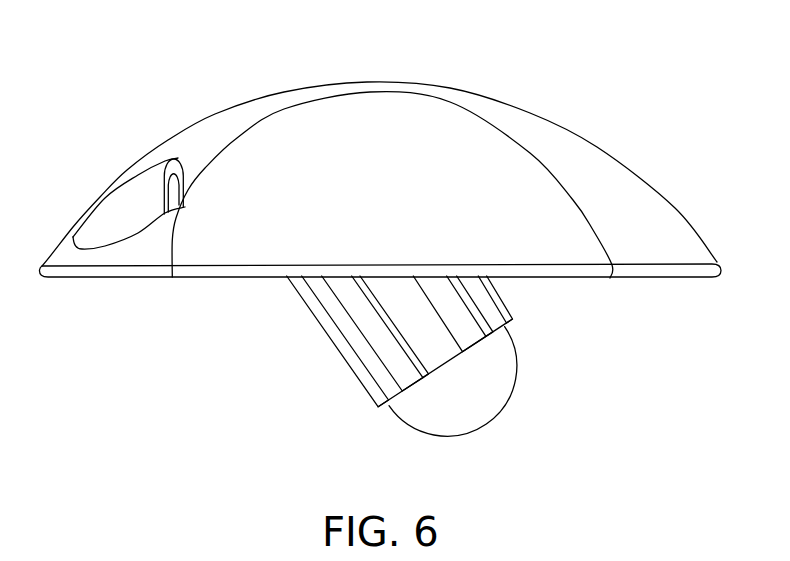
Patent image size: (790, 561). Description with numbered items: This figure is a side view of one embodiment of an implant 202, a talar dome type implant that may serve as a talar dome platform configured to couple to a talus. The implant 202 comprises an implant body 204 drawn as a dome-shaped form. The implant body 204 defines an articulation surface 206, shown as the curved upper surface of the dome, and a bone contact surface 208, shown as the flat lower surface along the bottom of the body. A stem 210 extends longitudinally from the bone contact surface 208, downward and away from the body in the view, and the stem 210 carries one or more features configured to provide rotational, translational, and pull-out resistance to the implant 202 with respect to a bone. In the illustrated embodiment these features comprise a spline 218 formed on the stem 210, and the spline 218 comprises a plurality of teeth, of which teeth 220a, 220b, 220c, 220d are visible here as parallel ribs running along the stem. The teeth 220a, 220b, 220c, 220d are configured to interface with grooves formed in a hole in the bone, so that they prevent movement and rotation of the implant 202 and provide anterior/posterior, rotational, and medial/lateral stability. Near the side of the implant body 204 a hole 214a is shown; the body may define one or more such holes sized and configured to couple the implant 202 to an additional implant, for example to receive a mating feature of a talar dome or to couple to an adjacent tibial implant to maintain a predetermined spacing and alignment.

The implant 202 is at (648, 75).
The implant body 204 is at (675, 208).
The articulation surface 206 is at (368, 82).
The bone contact surface 208 is at (598, 278).
The hole 214a is at (173, 190).
The spline 218 is at (380, 408).
The stem 210 is at (505, 408).
The tooth 220a is at (310, 307).
The tooth 220b is at (393, 363).
The tooth 220c is at (474, 333).
The tooth 220d is at (504, 313).